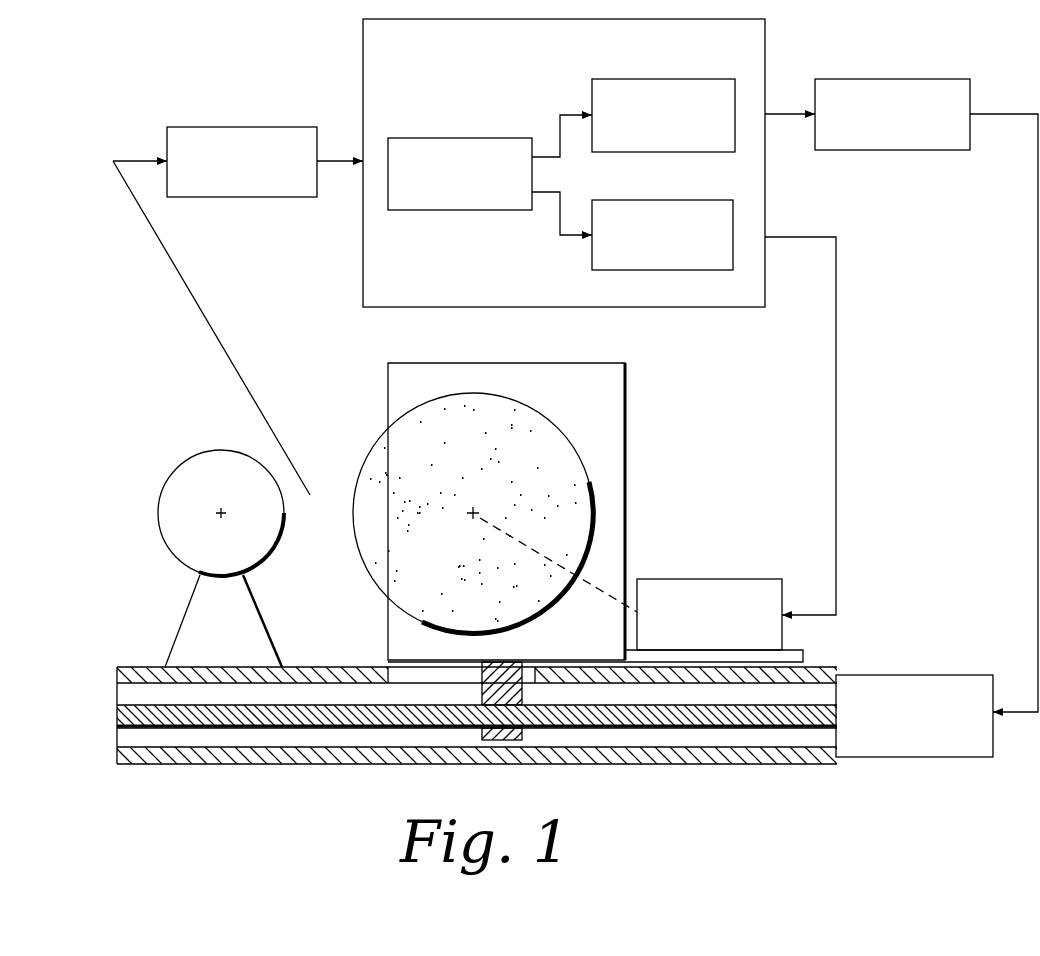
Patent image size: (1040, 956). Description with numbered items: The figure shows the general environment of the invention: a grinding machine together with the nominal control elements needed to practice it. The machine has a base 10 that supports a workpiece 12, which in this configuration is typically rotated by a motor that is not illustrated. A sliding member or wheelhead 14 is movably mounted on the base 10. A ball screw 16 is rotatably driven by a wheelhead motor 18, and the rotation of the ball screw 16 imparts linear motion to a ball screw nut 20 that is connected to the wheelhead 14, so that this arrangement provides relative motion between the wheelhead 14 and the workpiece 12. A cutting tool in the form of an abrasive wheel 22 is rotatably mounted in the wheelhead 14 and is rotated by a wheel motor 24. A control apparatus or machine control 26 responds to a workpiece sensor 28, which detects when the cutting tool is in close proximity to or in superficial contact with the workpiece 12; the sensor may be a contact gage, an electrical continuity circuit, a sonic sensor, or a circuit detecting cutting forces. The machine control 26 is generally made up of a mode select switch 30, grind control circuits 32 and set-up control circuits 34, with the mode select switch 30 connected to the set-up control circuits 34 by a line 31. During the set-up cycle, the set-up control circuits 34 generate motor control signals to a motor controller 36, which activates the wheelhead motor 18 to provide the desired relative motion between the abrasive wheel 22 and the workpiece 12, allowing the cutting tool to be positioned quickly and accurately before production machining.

The base 10 is at (330, 760).
The workpiece 12 is at (168, 547).
The wheelhead 14 is at (625, 410).
The ball screw 16 is at (657, 740).
The wheelhead motor 18 is at (922, 675).
The ball screw nut 20 is at (492, 742).
The abrasive wheel 22 is at (377, 438).
The wheel motor 24 is at (710, 579).
The machine control 26 is at (578, 73).
The workpiece sensor 28 is at (307, 197).
The mode select switch 30 is at (463, 138).
The set-up signal line 31 is at (558, 230).
The grind control circuits 32 is at (720, 152).
The set-up control circuits 34 is at (628, 202).
The motor controller 36 is at (885, 79).